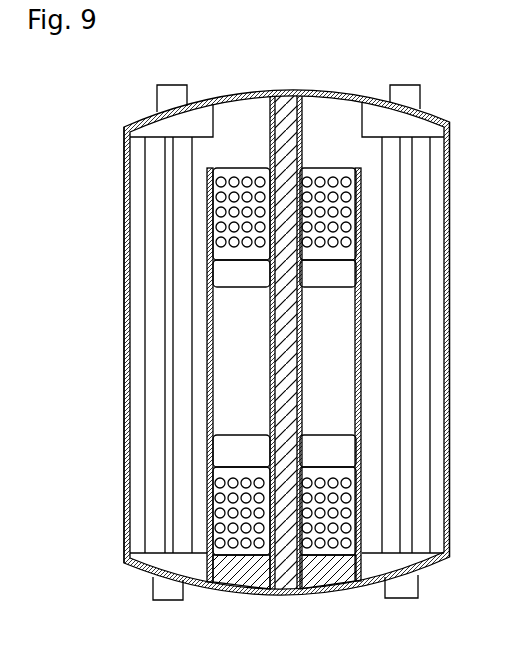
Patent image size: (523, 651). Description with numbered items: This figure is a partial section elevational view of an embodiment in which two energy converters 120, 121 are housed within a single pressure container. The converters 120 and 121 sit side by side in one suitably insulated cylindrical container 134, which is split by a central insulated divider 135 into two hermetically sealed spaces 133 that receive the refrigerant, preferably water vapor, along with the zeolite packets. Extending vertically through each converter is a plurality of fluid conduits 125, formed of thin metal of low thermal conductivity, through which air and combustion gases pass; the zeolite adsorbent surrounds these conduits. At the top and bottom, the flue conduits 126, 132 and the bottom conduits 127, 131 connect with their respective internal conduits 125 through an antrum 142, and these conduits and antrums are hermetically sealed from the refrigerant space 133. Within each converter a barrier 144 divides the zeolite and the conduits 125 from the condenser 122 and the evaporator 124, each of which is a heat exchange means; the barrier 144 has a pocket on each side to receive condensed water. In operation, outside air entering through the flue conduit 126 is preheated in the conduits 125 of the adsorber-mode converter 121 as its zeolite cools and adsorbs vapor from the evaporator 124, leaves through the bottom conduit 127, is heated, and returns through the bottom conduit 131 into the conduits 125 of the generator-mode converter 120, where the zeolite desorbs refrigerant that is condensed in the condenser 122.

The converter 120 is at (122, 297).
The converter 121 is at (457, 316).
The condenser 122 is at (258, 170).
The evaporator 124 is at (258, 468).
The fluid conduits 125 is at (172, 220).
The flue conduit 126 is at (390, 88).
The bottom conduit 127 is at (418, 588).
The bottom conduit 131 is at (152, 585).
The flue conduit 132 is at (156, 91).
The hermetically sealed space 133 is at (245, 96).
The cylindrical container 134 is at (451, 420).
The insulated divider 135 is at (271, 98).
The antrum 142 is at (148, 128).
The barrier 144 is at (210, 375).